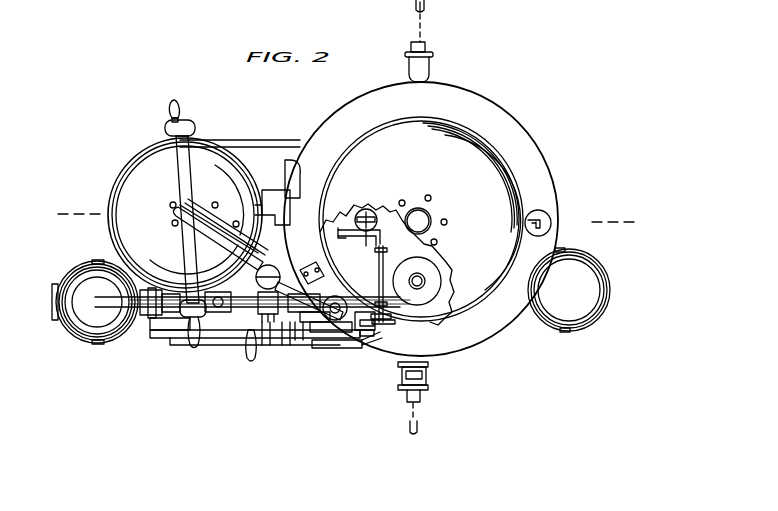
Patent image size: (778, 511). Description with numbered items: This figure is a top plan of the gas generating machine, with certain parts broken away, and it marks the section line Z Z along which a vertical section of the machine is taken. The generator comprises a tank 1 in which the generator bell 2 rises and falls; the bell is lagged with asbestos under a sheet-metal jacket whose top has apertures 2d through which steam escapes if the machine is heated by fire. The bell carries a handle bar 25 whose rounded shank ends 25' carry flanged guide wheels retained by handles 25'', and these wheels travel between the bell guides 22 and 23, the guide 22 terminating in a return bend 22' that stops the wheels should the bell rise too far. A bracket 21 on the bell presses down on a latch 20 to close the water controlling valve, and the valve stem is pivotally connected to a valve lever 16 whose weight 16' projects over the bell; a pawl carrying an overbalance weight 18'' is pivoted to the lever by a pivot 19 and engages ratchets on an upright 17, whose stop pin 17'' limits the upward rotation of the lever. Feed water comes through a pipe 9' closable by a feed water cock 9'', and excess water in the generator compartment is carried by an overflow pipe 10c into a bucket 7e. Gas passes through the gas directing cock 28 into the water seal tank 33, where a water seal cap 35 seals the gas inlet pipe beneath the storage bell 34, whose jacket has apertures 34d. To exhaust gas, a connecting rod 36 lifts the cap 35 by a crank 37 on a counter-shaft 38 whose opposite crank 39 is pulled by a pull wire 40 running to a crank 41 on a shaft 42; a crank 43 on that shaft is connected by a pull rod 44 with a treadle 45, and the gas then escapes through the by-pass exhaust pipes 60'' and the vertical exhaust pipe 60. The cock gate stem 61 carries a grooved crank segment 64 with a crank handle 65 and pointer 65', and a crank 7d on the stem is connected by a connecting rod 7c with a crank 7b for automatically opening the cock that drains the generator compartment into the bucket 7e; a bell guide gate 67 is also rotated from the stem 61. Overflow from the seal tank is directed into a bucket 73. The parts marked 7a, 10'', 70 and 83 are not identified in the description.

The line Z Z is at (343, 220).
The tank 1 is at (143, 143).
The generator bell 2 is at (120, 162).
The apertures 2d is at (172, 222).
The shaft bearing 7a is at (150, 318).
The crank 7b is at (163, 318).
The connecting rod 7c is at (190, 330).
The crank 7d is at (292, 340).
The bucket 7e is at (96, 262).
The pipe 9' is at (218, 328).
The feed water cock 9'' is at (293, 351).
The overflow pipe 10c is at (112, 302).
The axle pin 10'' is at (557, 223).
The valve lever 16 is at (218, 238).
The weight 16' is at (219, 229).
The upright 17 is at (372, 282).
The stop pin 17'' is at (312, 260).
The overbalance weight 18'' is at (328, 354).
The pivot 19 is at (305, 255).
The latch 20 is at (235, 214).
The bracket 21 is at (252, 242).
The guide 22 is at (193, 127).
The return bend 22' is at (153, 128).
The bell guide 23 is at (195, 345).
The handle bar 25 is at (174, 219).
The rounded shank ends 25' is at (193, 340).
The handles 25'' is at (160, 107).
The gas directing cock 28 is at (275, 185).
The water seal tank 33 is at (507, 177).
The storage bell 34 is at (548, 186).
The apertures 34d is at (430, 192).
The water seal cap 35 is at (372, 208).
The connecting rod 36 is at (355, 215).
The crank 37 is at (362, 240).
The counter-shaft 38 is at (378, 272).
The crank 39 is at (378, 312).
The pull wire 40 is at (390, 322).
The crank 41 is at (372, 322).
The shaft 42 is at (372, 333).
The crank 43 is at (378, 340).
The pull rod 44 is at (350, 348).
The treadle 45 is at (340, 348).
The vertical exhaust pipe 60 is at (430, 41).
The by pass exhaust pipes 60'' is at (240, 160).
The stem 61 is at (278, 256).
The grooved crank segment 64 is at (306, 345).
The crank handle 65 is at (249, 365).
The pointer 65' is at (252, 330).
The bell guide gate 67 is at (270, 345).
The arc 70 is at (194, 259).
The bucket 73 is at (588, 256).
The knob 83 is at (428, 378).